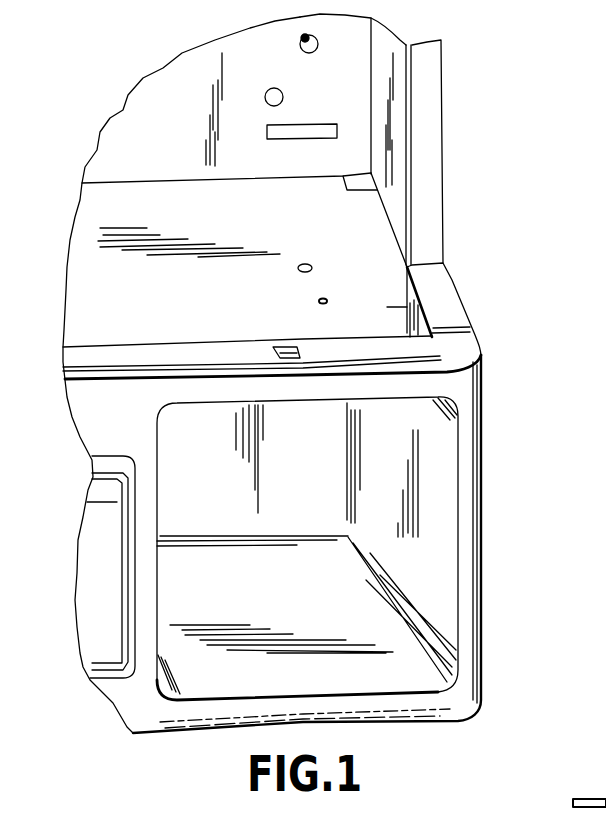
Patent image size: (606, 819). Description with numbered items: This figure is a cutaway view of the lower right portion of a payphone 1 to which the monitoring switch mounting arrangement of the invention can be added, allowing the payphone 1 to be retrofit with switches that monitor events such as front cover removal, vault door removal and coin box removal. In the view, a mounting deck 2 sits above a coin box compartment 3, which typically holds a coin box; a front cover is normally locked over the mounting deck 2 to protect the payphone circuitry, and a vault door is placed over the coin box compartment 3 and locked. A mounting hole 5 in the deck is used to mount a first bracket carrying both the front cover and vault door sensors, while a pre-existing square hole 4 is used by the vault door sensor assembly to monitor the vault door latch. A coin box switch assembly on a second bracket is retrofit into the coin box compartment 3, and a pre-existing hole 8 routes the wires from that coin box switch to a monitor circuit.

The payphone 1 is at (474, 99).
The mounting deck 2 is at (132, 205).
The coin box compartment 3 is at (263, 678).
The square hole 4 is at (284, 347).
The mounting hole 5 is at (328, 299).
The hole 8 is at (358, 182).